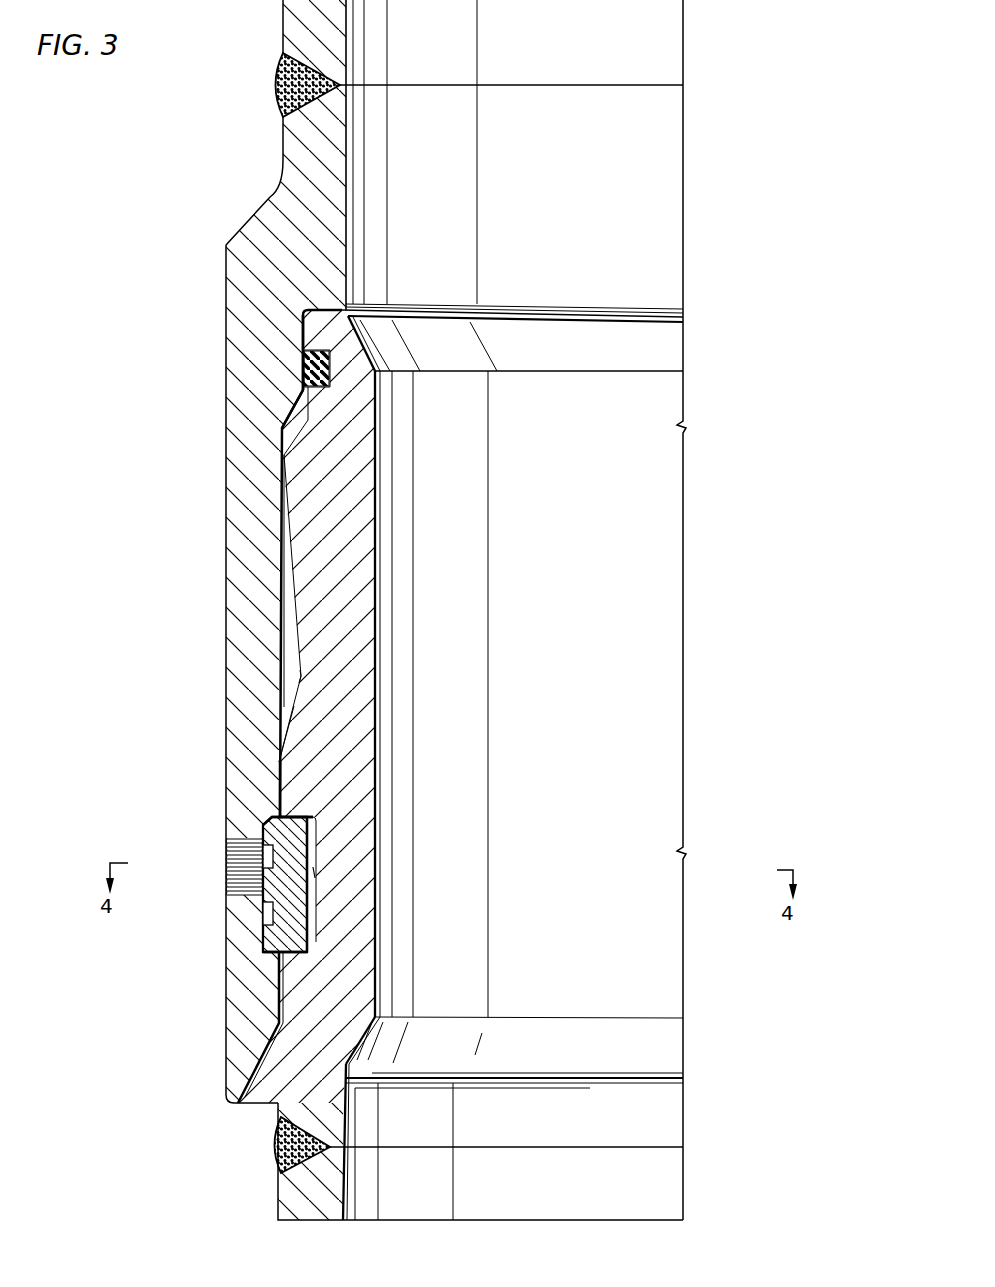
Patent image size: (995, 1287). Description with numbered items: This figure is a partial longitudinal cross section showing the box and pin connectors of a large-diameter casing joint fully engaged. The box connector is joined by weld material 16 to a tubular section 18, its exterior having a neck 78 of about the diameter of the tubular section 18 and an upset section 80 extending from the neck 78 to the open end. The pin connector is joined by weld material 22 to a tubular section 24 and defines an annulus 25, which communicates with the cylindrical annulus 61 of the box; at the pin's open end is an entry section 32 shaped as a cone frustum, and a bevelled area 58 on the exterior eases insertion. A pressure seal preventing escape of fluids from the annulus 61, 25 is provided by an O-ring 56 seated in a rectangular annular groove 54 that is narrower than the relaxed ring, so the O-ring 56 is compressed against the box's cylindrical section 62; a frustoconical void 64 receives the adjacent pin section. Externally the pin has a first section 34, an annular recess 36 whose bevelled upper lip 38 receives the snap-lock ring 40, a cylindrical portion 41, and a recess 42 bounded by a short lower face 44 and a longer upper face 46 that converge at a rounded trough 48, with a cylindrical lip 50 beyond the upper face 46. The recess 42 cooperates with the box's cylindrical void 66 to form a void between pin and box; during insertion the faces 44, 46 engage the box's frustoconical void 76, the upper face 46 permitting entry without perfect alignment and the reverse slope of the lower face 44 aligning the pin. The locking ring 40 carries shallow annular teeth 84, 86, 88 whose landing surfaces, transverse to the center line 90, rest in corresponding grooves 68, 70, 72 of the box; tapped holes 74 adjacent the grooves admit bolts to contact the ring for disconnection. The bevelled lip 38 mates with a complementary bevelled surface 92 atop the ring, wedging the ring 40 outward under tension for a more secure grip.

The weld material 16 is at (274, 85).
The tubular section 18 is at (283, 22).
The weld material 22 is at (276, 1147).
The tubular section 24 is at (278, 1190).
The annulus 25 is at (622, 679).
The entry section 32 is at (590, 358).
The first section 34 is at (283, 998).
The annular recess 36 is at (315, 873).
The upper lip 38 is at (311, 811).
The snap-lock ring 40 is at (292, 914).
The cylindrical portion 41 is at (281, 782).
The recess 42 is at (288, 652).
The lower face 44 is at (290, 725).
The upper face 46 is at (296, 603).
The trough 48 is at (302, 676).
The cylindrical lip 50 is at (283, 483).
The annular groove 54 is at (312, 384).
The O-ring 56 is at (306, 372).
The bevelled area 58 is at (302, 310).
The annulus 61 is at (580, 159).
The cylindrical section 62 is at (301, 347).
The frustoconical void 64 is at (287, 418).
The cylindrical void 66 is at (291, 723).
The annular groove 68 is at (277, 816).
The annular groove 70 is at (226, 888).
The annular groove 72 is at (265, 922).
The tapped holes 74 is at (226, 847).
The frustoconical void 76 is at (252, 1103).
The neck 78 is at (283, 143).
The upset section 80 is at (226, 510).
The annular tooth 84 is at (309, 838).
The annular tooth 86 is at (313, 880).
The annular tooth 88 is at (272, 943).
The center line 90 is at (683, 747).
The bevelled surface 92 is at (316, 828).